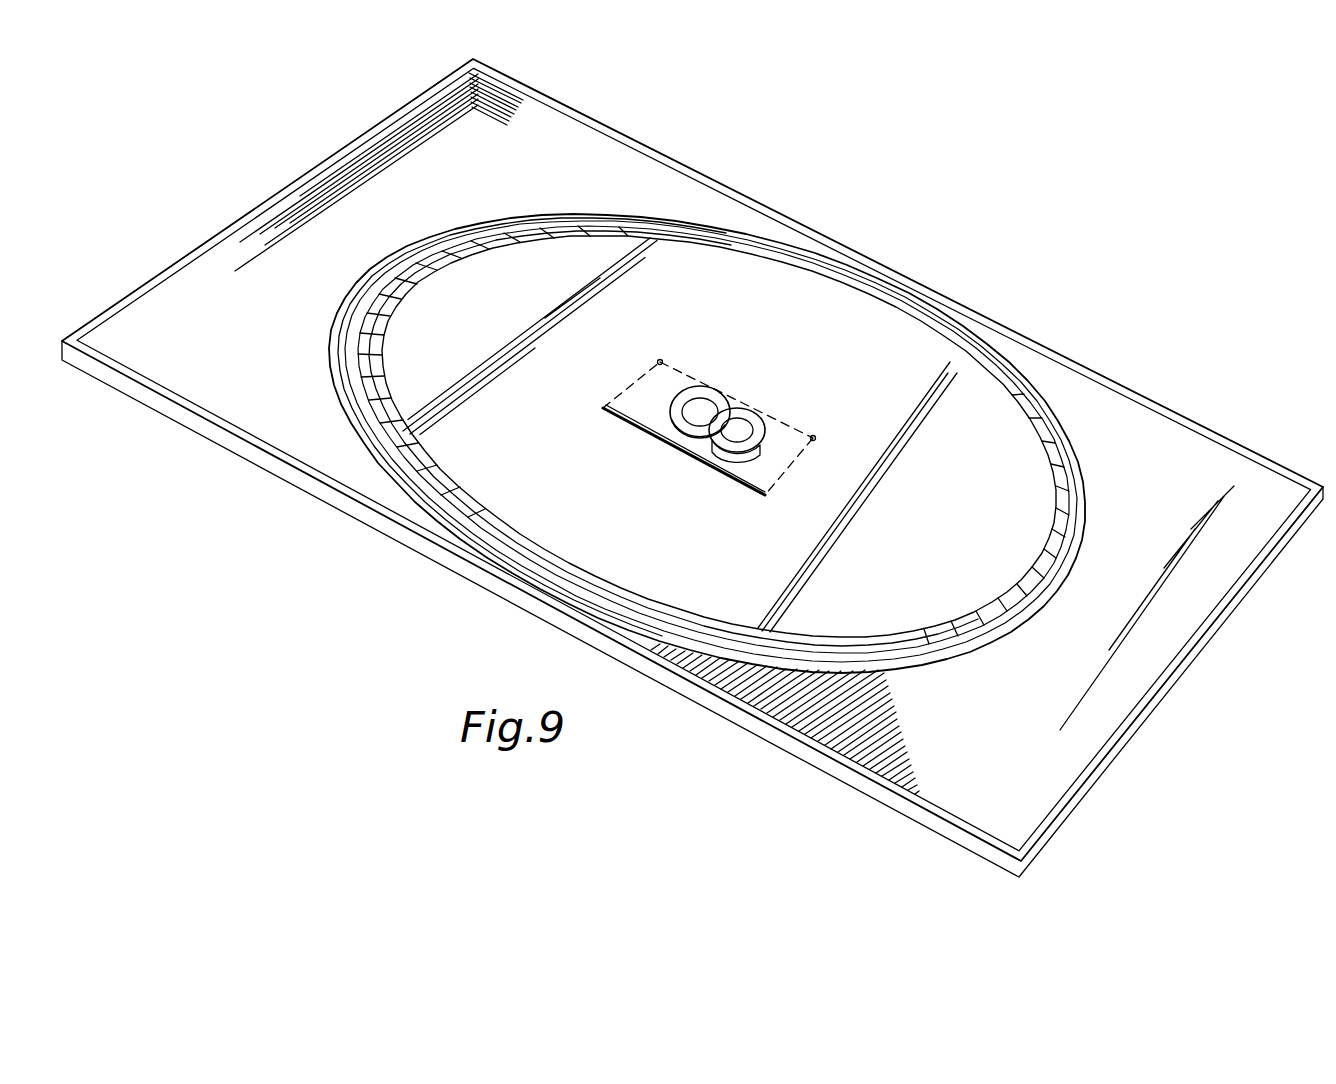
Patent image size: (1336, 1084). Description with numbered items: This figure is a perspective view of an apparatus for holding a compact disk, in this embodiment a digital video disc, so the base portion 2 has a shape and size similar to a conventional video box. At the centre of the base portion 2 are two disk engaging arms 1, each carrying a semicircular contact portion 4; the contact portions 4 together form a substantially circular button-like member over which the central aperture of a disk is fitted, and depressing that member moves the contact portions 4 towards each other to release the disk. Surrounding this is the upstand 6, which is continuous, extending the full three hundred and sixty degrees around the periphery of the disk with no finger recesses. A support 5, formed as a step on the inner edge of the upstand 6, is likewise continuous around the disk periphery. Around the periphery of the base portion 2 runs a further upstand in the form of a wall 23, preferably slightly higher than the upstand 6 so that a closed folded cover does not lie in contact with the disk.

The disk engaging arm 1 is at (640, 420).
The base portion 2 is at (1109, 708).
The contact portion 4 is at (690, 378).
The support 5 is at (427, 267).
The upstand 6 is at (1060, 450).
The wall 23 is at (197, 415).